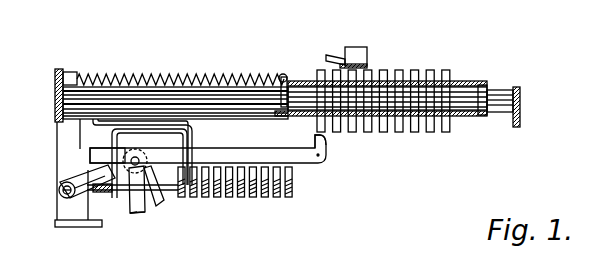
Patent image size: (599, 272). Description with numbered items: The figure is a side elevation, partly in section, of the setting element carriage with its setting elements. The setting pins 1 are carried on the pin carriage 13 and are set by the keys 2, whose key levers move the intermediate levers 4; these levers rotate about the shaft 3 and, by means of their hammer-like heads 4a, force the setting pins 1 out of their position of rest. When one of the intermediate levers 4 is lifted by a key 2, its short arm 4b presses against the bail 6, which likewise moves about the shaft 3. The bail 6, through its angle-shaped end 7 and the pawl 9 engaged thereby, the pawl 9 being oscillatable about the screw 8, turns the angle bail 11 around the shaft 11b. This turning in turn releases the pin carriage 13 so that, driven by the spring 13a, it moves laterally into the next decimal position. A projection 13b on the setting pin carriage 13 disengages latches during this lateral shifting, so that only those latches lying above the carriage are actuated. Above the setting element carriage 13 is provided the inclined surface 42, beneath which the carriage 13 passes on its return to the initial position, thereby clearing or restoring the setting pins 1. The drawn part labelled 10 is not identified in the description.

The setting pins 1 is at (432, 72).
The keys 2 is at (228, 193).
The shaft 3 is at (137, 158).
The intermediate levers 4 is at (325, 157).
The hammer-like heads 4a is at (325, 141).
The short arm 4b is at (138, 213).
The bail 6 is at (157, 200).
The angle-shaped end 7 is at (90, 162).
The screw 8 is at (63, 197).
The pawl 9 is at (85, 185).
The lever arm 10 is at (100, 177).
The angle bail 11 is at (190, 138).
The shaft 11b is at (130, 215).
The pin carriage 13 is at (472, 117).
The spring 13a is at (188, 72).
The projection 13b is at (498, 117).
The inclined surface 42 is at (337, 58).